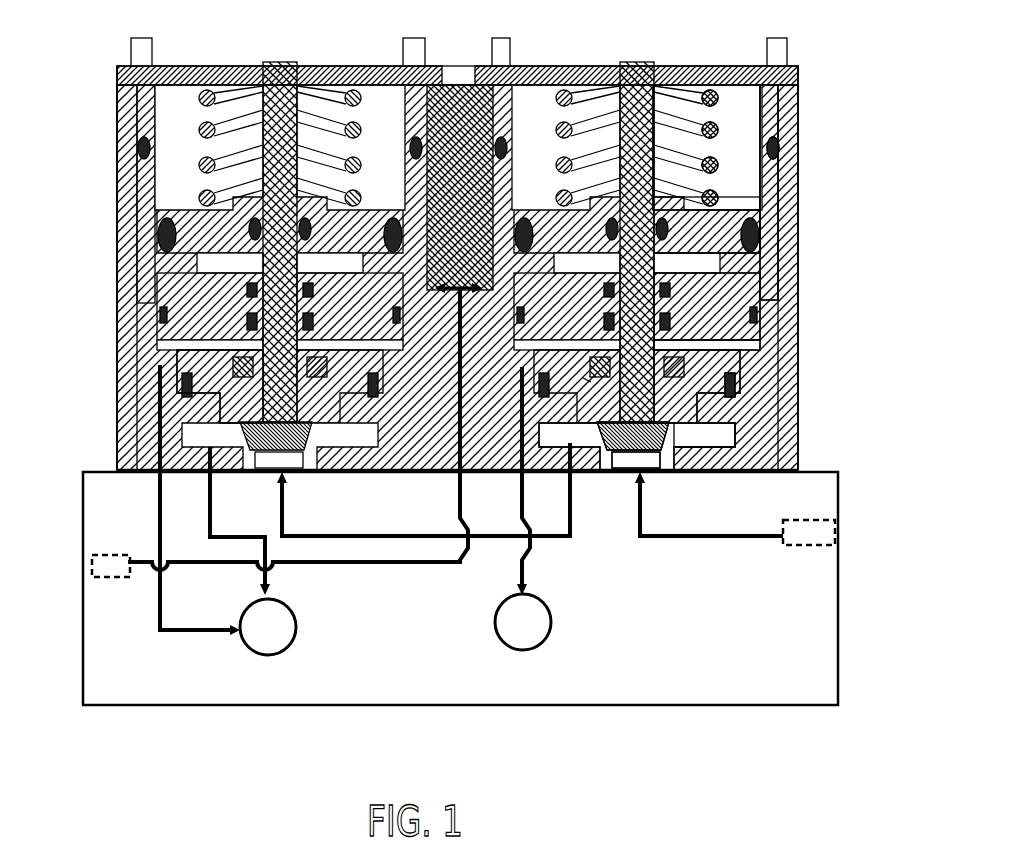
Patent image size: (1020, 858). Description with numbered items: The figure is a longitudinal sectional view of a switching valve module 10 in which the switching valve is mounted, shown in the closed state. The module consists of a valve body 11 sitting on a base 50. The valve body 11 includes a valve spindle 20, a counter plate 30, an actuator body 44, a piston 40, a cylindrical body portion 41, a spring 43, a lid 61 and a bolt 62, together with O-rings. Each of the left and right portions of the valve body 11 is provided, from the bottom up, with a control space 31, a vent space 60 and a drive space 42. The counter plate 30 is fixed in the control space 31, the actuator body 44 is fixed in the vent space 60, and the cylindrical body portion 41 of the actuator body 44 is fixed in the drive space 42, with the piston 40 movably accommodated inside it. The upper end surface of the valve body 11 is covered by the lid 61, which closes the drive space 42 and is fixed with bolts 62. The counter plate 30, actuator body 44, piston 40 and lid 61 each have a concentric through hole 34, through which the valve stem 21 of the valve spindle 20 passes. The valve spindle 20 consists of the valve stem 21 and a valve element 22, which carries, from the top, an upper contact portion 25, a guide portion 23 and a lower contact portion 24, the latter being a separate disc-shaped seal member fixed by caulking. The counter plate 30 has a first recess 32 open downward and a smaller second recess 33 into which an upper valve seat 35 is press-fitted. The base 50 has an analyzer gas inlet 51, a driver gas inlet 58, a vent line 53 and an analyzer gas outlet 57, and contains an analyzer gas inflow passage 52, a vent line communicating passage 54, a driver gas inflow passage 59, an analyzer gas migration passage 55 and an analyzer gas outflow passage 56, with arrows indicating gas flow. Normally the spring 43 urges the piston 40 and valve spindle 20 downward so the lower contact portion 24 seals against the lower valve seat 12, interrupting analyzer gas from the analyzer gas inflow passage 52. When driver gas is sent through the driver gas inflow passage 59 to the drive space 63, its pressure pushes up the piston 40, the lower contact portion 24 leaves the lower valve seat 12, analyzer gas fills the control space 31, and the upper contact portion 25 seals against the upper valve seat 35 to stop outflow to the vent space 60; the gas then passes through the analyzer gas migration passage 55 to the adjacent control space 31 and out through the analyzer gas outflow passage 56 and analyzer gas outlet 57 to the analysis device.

The switching valve module 10 is at (866, 60).
The valve body 11 is at (806, 330).
The lower valve seat 12 is at (677, 461).
The valve spindle 20 is at (709, 147).
The valve stem 21 is at (690, 247).
The valve element 22 is at (742, 425).
The guide portion 23 is at (723, 432).
The lower contact portion 24 is at (722, 455).
The upper contact portion 25 is at (723, 362).
The counter plate 30 is at (752, 325).
The control space 31 is at (692, 440).
The first recess 32 is at (706, 396).
The second recess 33 is at (587, 380).
The through hole 34 is at (200, 402).
The upper valve seat 35 is at (716, 345).
The piston 40 is at (722, 213).
The cylindrical body portion 41 is at (774, 138).
The drive space 42 is at (742, 123).
The spring 43 is at (680, 102).
The actuator body 44 is at (774, 273).
The base 50 is at (782, 615).
The analyzer gas inlet 51 is at (828, 532).
The analyzer gas inflow passage 52 is at (736, 545).
The vent line 53 is at (527, 628).
The vent line communicating passage 54 is at (162, 583).
The analyzer gas migration passage 55 is at (550, 540).
The analyzer gas outflow passage 56 is at (273, 567).
The analyzer gas outlet 57 is at (272, 633).
The driver gas inlet 58 is at (102, 565).
The driver gas inflow passage 59 is at (395, 565).
The vent space 60 is at (155, 357).
The lid 61 is at (714, 66).
The bolt 62 is at (776, 47).
The drive space 63 is at (177, 273).